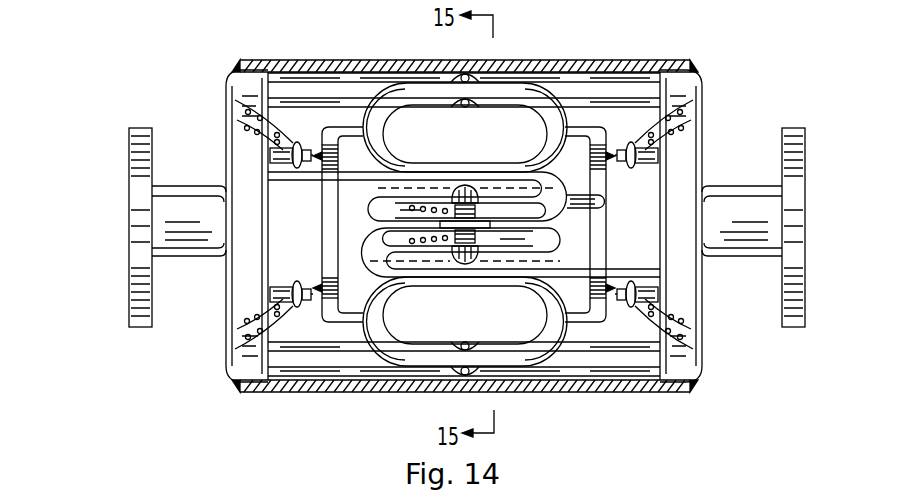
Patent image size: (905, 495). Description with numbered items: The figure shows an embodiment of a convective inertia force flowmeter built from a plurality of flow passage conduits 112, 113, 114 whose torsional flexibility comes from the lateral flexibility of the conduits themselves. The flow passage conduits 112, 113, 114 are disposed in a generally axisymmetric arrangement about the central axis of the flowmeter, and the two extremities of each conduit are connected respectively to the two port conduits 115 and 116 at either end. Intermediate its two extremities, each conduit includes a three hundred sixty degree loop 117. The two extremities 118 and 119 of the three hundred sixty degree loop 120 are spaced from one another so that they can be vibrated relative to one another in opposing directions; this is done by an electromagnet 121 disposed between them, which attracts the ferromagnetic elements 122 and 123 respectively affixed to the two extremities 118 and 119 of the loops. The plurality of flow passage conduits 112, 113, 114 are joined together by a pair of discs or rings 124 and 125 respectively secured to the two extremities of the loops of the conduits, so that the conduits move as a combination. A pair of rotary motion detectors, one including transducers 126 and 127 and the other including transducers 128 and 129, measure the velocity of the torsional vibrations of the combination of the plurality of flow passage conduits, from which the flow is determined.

The flow passage conduit 112 is at (603, 95).
The flow passage conduit 113 is at (420, 265).
The flow passage conduit 114 is at (580, 350).
The port conduit 115 is at (185, 215).
The port conduit 116 is at (745, 215).
The 360 degree loop 117 is at (443, 152).
The extremity of the 360 degree loop 118 is at (427, 183).
The extremity of the 360 degree loop 119 is at (493, 263).
The 360 degree loop 120 is at (560, 222).
The electromagnet 121 is at (518, 208).
The ferromagnetic element 122 is at (466, 185).
The ferromagnetic element 123 is at (458, 263).
The disc or ring 124 is at (322, 212).
The disc or ring 125 is at (608, 235).
The transducer 126 is at (302, 145).
The transducer 127 is at (313, 302).
The transducer 128 is at (620, 143).
The transducer 129 is at (617, 300).